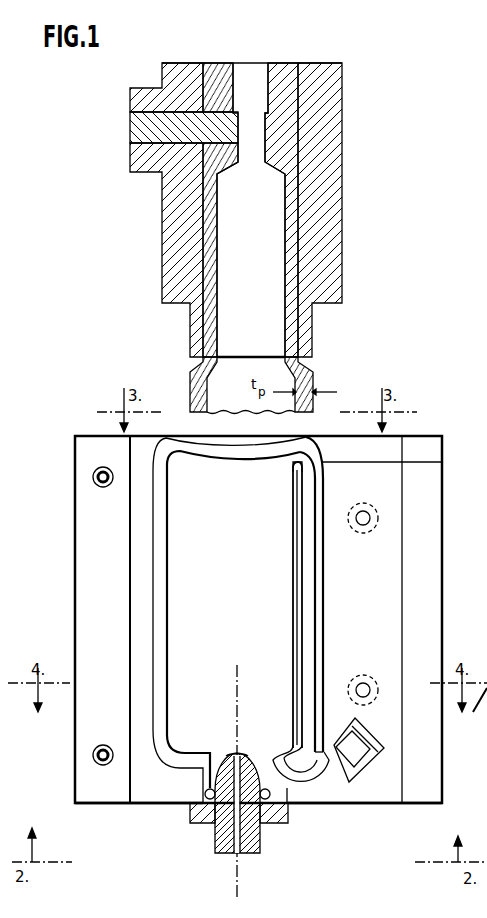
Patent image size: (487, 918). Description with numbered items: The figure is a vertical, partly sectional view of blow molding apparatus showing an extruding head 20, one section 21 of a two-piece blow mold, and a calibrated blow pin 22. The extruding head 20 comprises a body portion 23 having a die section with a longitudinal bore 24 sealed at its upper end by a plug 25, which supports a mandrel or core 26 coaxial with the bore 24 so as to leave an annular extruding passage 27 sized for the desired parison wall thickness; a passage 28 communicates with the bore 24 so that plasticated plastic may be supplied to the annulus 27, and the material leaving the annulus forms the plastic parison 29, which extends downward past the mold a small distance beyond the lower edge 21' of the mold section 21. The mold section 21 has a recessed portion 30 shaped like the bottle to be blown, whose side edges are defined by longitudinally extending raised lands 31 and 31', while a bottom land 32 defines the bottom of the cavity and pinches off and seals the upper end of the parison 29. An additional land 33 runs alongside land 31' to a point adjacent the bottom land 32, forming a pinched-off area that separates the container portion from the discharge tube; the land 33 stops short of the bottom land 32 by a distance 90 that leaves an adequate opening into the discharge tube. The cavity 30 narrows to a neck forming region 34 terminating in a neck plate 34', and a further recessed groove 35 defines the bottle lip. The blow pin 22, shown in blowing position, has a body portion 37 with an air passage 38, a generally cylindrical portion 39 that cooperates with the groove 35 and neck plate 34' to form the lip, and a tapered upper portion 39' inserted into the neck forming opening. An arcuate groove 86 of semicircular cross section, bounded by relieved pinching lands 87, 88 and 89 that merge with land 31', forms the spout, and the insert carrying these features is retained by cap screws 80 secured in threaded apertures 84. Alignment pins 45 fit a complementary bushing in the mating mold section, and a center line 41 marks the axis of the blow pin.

The extruding head 20 is at (330, 113).
The mold section 21 is at (272, 619).
The lower edge of mold section 21' is at (365, 820).
The blow pin 22 is at (205, 888).
The body portion 23 is at (342, 248).
The longitudinal bore 24 is at (296, 205).
The plug 25 is at (281, 62).
The mandrel or core 26 is at (222, 232).
The annular extruding passage 27 is at (207, 325).
The passage 28 is at (160, 148).
The plastic parison 29 is at (308, 374).
The recessed portion 30 is at (212, 475).
The side land 31 is at (148, 673).
The side land 31' is at (328, 594).
The bottom land 32 is at (268, 450).
The additional land 33 is at (299, 544).
The region of reduced transverse dimension 34 is at (182, 761).
The neck plate 34' is at (179, 812).
The recessed groove 35 is at (289, 804).
The body portion 37 is at (213, 838).
The air passage 38 is at (258, 855).
The cylindrical portion 39 is at (256, 803).
The upper portion 39' is at (251, 730).
The center line 41 is at (236, 690).
The pins 45 is at (96, 482).
The cap screws 80 is at (364, 517).
The threaded apertures 84 is at (372, 524).
The groove 86 is at (336, 783).
The pinching land 87 is at (376, 756).
The pinching land 88 is at (363, 733).
The pinching land 89 is at (348, 736).
The distance 90 is at (292, 465).